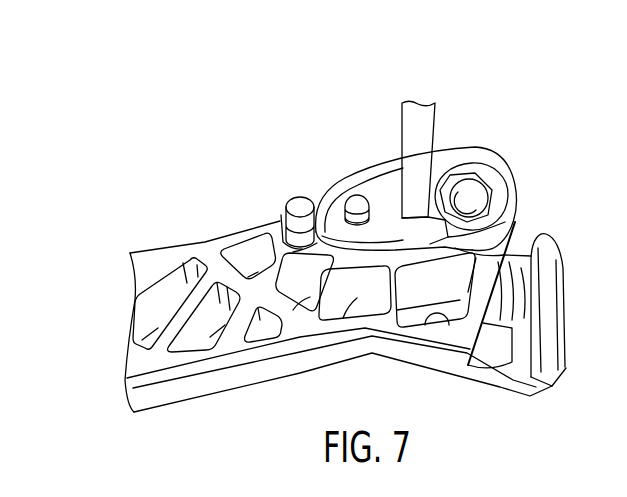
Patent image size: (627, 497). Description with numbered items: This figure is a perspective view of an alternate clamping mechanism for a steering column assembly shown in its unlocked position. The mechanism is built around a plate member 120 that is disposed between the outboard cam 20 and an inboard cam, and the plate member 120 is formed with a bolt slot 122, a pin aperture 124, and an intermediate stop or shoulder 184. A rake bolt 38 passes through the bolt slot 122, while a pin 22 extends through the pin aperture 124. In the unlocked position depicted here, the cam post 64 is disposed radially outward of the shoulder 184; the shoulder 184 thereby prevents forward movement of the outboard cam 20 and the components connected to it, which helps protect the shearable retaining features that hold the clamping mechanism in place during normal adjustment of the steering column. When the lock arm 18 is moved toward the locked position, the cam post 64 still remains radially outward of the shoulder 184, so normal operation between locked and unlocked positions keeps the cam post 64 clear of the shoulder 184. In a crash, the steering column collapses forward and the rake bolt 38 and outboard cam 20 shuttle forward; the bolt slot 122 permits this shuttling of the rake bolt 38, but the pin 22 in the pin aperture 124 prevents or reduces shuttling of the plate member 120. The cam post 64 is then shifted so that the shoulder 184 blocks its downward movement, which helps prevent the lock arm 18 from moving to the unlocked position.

The lock arm 18 is at (206, 247).
The outboard cam 20 is at (490, 202).
The pin 22 is at (357, 198).
The rake bolt 38 is at (438, 122).
The cam post 64 is at (302, 206).
The plate member 120 is at (382, 183).
The bolt slot 122 is at (413, 220).
The pin aperture 124 is at (358, 225).
The shoulder 184 is at (331, 219).